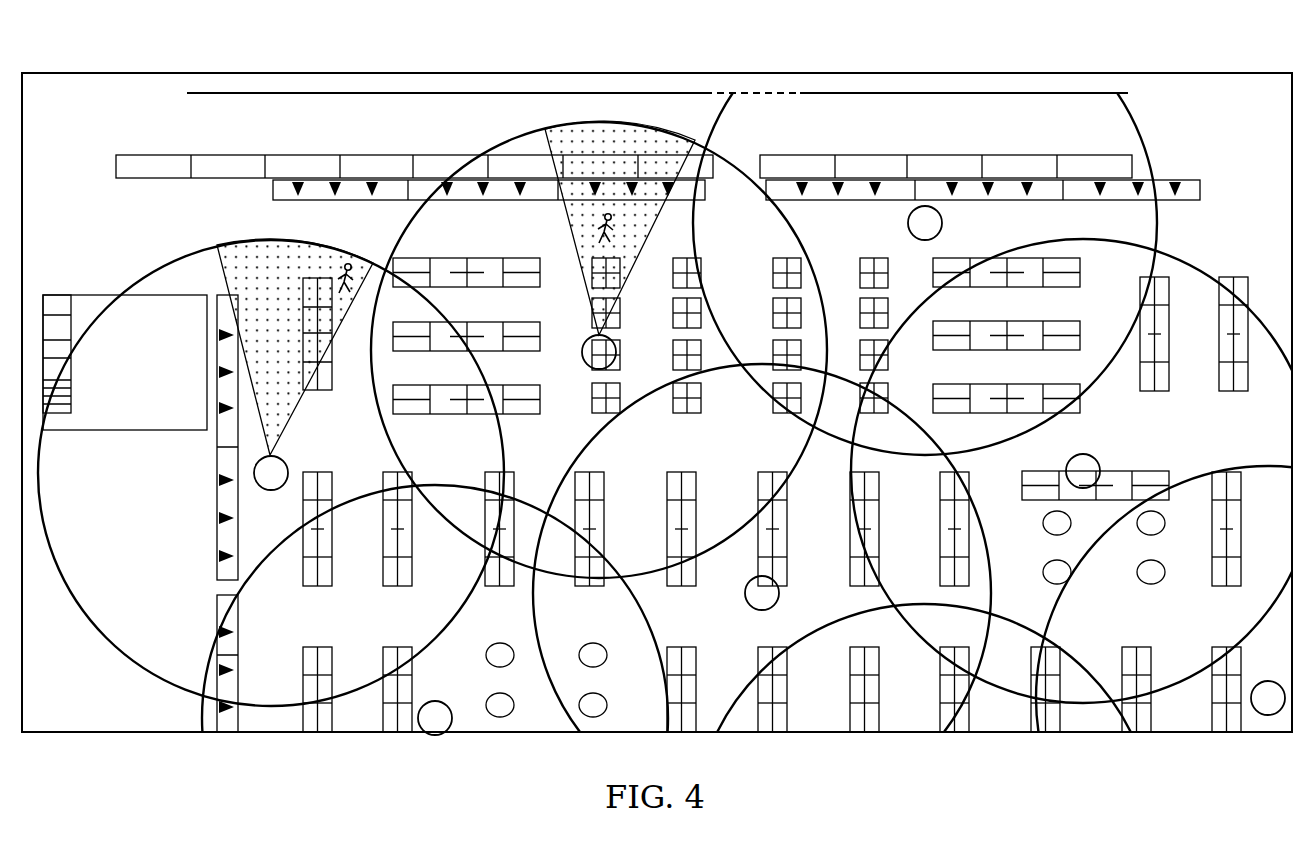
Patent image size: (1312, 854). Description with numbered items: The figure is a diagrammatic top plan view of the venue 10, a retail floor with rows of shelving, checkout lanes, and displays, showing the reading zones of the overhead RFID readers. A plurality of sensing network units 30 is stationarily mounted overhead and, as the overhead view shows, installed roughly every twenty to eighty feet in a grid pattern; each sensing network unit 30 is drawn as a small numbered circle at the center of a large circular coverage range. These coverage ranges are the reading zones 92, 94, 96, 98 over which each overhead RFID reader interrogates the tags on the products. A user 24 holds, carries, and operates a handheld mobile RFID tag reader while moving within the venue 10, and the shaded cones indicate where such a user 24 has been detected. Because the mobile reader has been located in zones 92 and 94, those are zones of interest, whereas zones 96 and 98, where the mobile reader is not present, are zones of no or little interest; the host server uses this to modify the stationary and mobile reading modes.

The venue 10 is at (103, 126).
The user 24 is at (350, 270).
The sensing network unit 30 is at (254, 470).
The reading zone 92 is at (120, 613).
The reading zone 94 is at (520, 147).
The reading zone 96 is at (1025, 127).
The reading zone 98 is at (1182, 278).